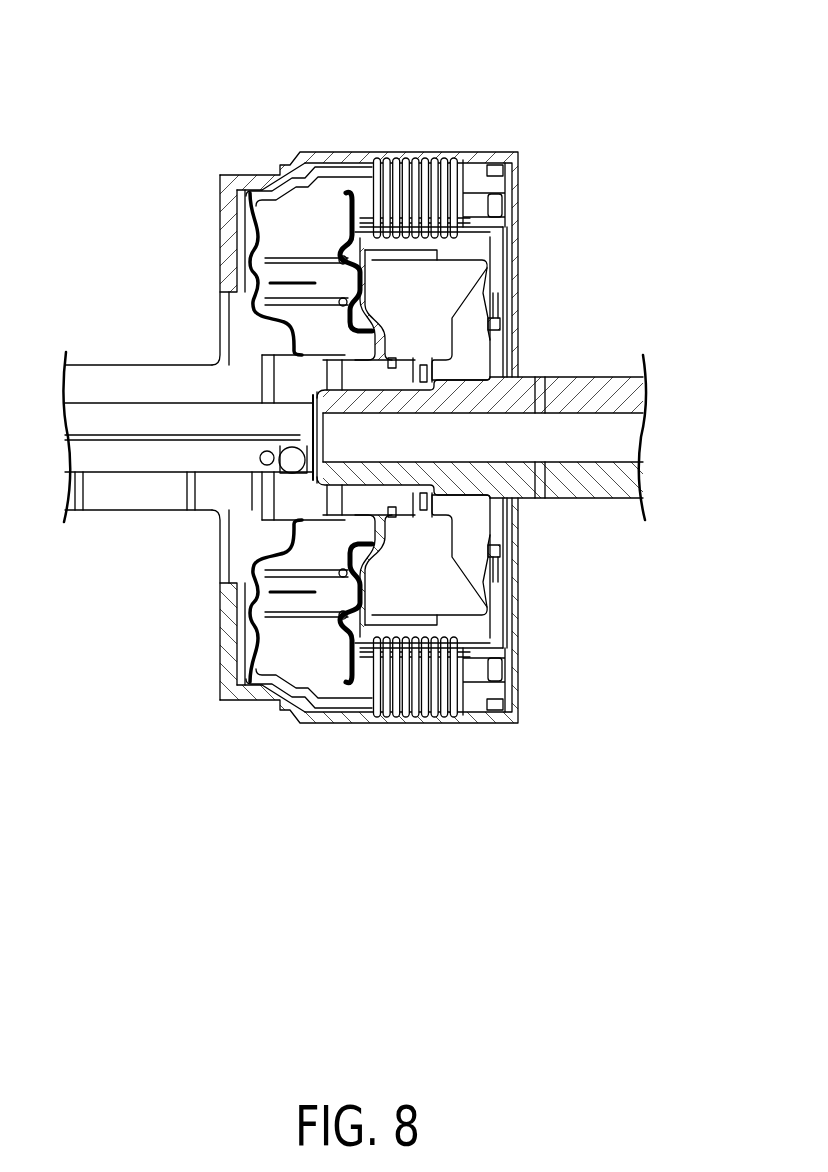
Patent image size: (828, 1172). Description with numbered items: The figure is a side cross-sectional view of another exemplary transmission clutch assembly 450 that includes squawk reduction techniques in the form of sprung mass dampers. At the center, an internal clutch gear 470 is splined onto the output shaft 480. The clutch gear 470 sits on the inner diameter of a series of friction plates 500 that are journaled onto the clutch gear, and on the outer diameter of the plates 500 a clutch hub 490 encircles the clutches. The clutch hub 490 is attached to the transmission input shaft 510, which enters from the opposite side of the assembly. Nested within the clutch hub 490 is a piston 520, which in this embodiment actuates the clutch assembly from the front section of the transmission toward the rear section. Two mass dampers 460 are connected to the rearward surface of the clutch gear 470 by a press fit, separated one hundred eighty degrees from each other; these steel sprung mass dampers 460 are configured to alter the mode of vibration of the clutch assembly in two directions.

The transmission clutch assembly 450 is at (548, 63).
The mass dampers 460 is at (498, 325).
The clutch gear 470 is at (500, 257).
The output shaft 480 is at (610, 382).
The clutch hub 490 is at (312, 158).
The friction plates 500 is at (441, 158).
The transmission input shaft 510 is at (120, 378).
The piston 520 is at (262, 237).